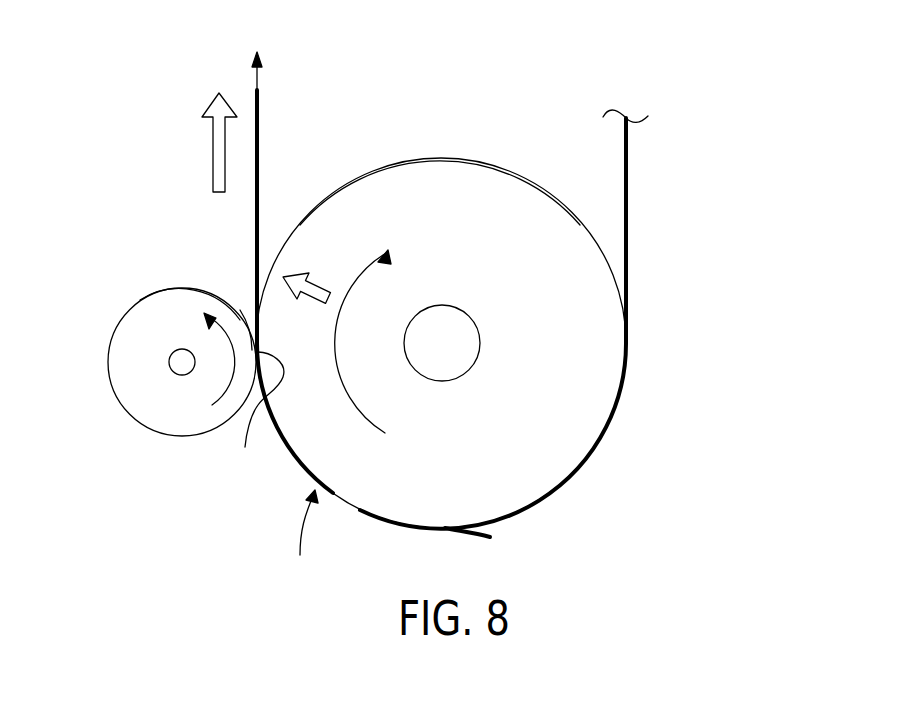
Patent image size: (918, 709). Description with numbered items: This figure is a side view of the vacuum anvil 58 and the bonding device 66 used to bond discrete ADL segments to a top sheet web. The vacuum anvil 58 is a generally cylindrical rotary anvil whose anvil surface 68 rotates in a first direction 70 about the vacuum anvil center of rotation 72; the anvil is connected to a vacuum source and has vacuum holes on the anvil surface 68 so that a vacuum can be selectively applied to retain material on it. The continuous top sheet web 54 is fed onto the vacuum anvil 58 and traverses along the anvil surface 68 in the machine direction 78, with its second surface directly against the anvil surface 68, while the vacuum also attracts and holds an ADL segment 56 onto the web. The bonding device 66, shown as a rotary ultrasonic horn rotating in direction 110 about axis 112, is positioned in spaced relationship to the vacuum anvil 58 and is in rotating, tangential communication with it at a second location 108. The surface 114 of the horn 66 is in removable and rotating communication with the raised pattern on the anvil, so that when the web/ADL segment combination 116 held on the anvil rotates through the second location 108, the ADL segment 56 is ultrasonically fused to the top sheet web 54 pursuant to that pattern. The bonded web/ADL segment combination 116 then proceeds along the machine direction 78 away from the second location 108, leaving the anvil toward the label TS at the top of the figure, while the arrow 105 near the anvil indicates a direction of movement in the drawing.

The continuous top sheet web 54 is at (529, 509).
The ADL segment 56 is at (303, 476).
The vacuum anvil 58 is at (455, 279).
The bonding device 66 is at (150, 380).
The anvil surface 68 is at (434, 159).
The first direction 70 is at (352, 392).
The vacuum anvil center of rotation 72 is at (452, 357).
The machine direction 78 is at (214, 146).
The direction arrow 105 is at (320, 288).
The second location 108 is at (256, 415).
The direction 110 is at (238, 312).
The axis 112 is at (178, 356).
The surface 114 is at (180, 288).
The web/ADL segment combination 116 is at (303, 538).
The take-up side TS is at (258, 54).